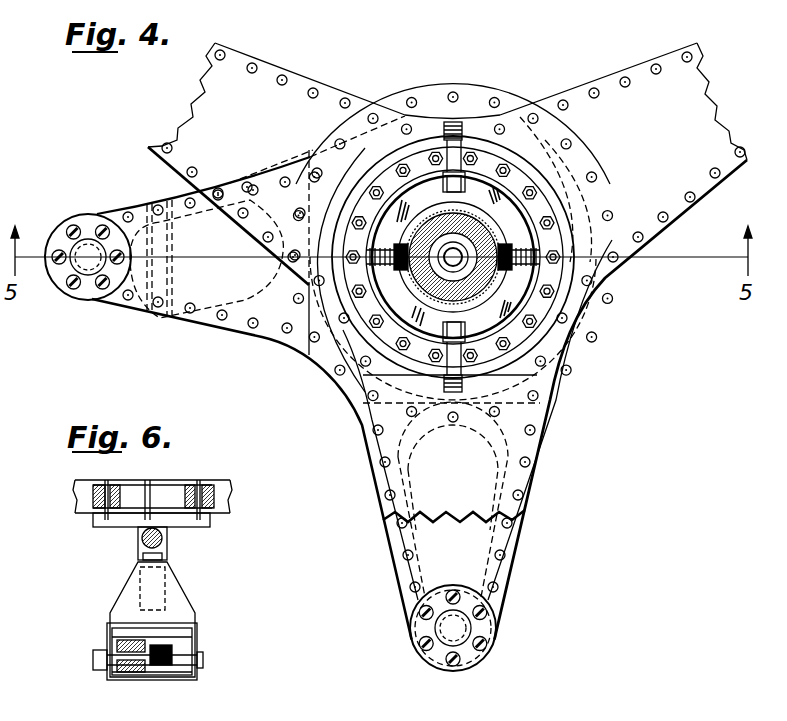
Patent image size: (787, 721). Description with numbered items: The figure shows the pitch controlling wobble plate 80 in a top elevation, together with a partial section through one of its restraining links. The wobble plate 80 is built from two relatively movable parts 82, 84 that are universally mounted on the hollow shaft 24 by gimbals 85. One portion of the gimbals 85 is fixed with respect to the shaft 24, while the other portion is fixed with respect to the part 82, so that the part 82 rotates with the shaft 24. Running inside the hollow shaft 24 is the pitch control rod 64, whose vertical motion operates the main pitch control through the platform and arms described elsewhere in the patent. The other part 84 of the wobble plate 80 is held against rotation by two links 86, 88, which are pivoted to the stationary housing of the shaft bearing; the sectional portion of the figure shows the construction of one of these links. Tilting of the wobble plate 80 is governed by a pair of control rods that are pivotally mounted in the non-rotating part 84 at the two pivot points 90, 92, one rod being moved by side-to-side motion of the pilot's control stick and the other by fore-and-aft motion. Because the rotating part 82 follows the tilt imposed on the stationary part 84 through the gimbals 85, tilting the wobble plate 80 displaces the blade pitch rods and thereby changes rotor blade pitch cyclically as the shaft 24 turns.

In FIG. 4, the wobble plate 80 is at (711, 192).
In FIG. 4, the rotatable part of wobble plate 82 is at (187, 132).
In FIG. 4, the non-rotating part of wobble plate 84 is at (273, 330).
In FIG. 6, the non-rotating part of wobble plate 84 is at (222, 503).
In FIG. 4, the gimbals 85 is at (480, 188).
In FIG. 4, the pitch control rod 64 is at (467, 248).
In FIG. 4, the hollow shaft 24 is at (498, 285).
In FIG. 4, the pivot mounting for control rod 90 is at (63, 288).
In FIG. 4, the pivot mounting for control rod 92 is at (495, 627).
In FIG. 6, the link 86 is at (172, 598).
In FIG. 6, the link 88 is at (170, 680).